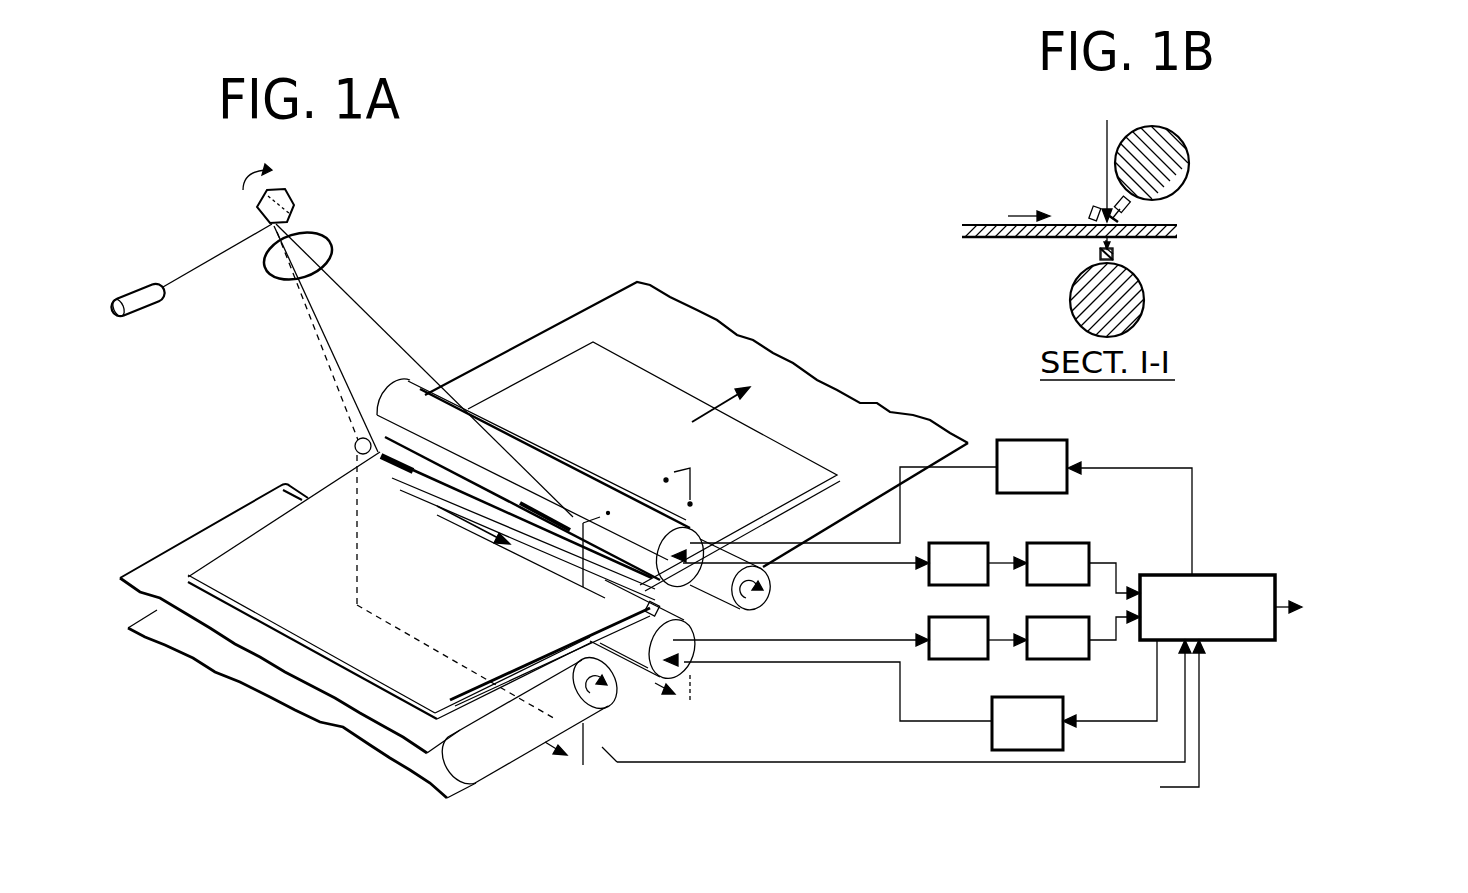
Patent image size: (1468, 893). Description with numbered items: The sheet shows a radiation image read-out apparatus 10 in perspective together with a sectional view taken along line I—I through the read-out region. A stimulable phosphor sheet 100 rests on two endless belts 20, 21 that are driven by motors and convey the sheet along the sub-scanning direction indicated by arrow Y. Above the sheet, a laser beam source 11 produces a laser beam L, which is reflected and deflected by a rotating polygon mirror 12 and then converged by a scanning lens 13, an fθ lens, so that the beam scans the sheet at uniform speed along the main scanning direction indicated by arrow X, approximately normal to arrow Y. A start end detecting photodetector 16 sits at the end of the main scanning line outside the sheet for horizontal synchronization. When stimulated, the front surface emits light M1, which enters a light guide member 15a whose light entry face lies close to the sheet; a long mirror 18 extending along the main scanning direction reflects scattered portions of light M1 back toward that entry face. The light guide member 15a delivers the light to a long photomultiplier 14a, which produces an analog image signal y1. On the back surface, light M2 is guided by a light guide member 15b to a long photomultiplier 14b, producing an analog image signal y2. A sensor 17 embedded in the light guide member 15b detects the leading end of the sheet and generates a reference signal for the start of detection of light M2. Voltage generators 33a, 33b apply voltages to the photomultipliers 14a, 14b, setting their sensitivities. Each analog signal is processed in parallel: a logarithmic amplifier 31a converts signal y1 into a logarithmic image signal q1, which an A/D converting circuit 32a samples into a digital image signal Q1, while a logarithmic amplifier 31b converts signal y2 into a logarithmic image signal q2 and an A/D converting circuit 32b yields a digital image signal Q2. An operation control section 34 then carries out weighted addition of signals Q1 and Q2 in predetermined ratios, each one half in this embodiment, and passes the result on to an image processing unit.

In FIG. 1A, the radiation image read-out apparatus 10 is at (795, 309).
In FIG. 1A, the laser beam source 11 is at (142, 312).
In FIG. 1A, the rotating polygon mirror 12 is at (298, 207).
In FIG. 1A, the scanning lens 13 is at (332, 245).
In FIG. 1A, the photomultiplier 14a is at (573, 471).
In FIG. 1B, the photomultiplier 14a is at (1165, 130).
In FIG. 1A, the photomultiplier 14b is at (662, 672).
In FIG. 1B, the photomultiplier 14b is at (1140, 302).
In FIG. 1A, the light guide member 15a is at (654, 552).
In FIG. 1B, the light guide member 15a is at (1123, 202).
In FIG. 1A, the light guide member 15b is at (637, 611).
In FIG. 1B, the light guide member 15b is at (1100, 253).
In FIG. 1A, the start end detecting photodetector 16 is at (355, 447).
In FIG. 1A, the sensor 17 is at (1166, 718).
In FIG. 1B, the sensor 17 is at (1115, 259).
In FIG. 1A, the mirror 18 is at (544, 559).
In FIG. 1B, the mirror 18 is at (1086, 209).
In FIG. 1A, the endless belt 20 is at (453, 732).
In FIG. 1A, the endless belt 21 is at (907, 420).
In FIG. 1A, the logarithmic amplifier 31a is at (843, 557).
In FIG. 1A, the logarithmic amplifier 31b is at (830, 654).
In FIG. 1A, the A/D converting circuit 32a is at (1064, 561).
In FIG. 1A, the A/D converting circuit 32b is at (1064, 654).
In FIG. 1A, the voltage generator 33a is at (1067, 446).
In FIG. 1A, the voltage generator 33b is at (1063, 738).
In FIG. 1A, the operation control section 34 is at (1222, 572).
In FIG. 1A, the stimulable phosphor sheet 100 is at (240, 559).
In FIG. 1B, the stimulable phosphor sheet 100 is at (987, 237).
In FIG. 1A, the laser beam L is at (211, 263).
In FIG. 1B, the laser beam L is at (1104, 138).
In FIG. 1A, the emitted light M1 is at (416, 483).
In FIG. 1B, the emitted light M1 is at (1119, 220).
In FIG. 1B, the emitted light M2 is at (1115, 247).
In FIG. 1A, the main scanning direction X is at (461, 518).
In FIG. 1A, the sub-scanning direction Y is at (718, 402).
In FIG. 1B, the sub-scanning direction Y is at (1020, 202).
In FIG. 1A, the analog image signal y1 is at (831, 568).
In FIG. 1A, the analog image signal y2 is at (840, 640).
In FIG. 1A, the logarithmic image signal q1 is at (1000, 565).
In FIG. 1A, the logarithmic image signal q2 is at (1000, 642).
In FIG. 1A, the digital image signal Q1 is at (1104, 563).
In FIG. 1A, the digital image signal Q2 is at (1105, 641).
In FIG. 1A, the line I— I is at (625, 727).